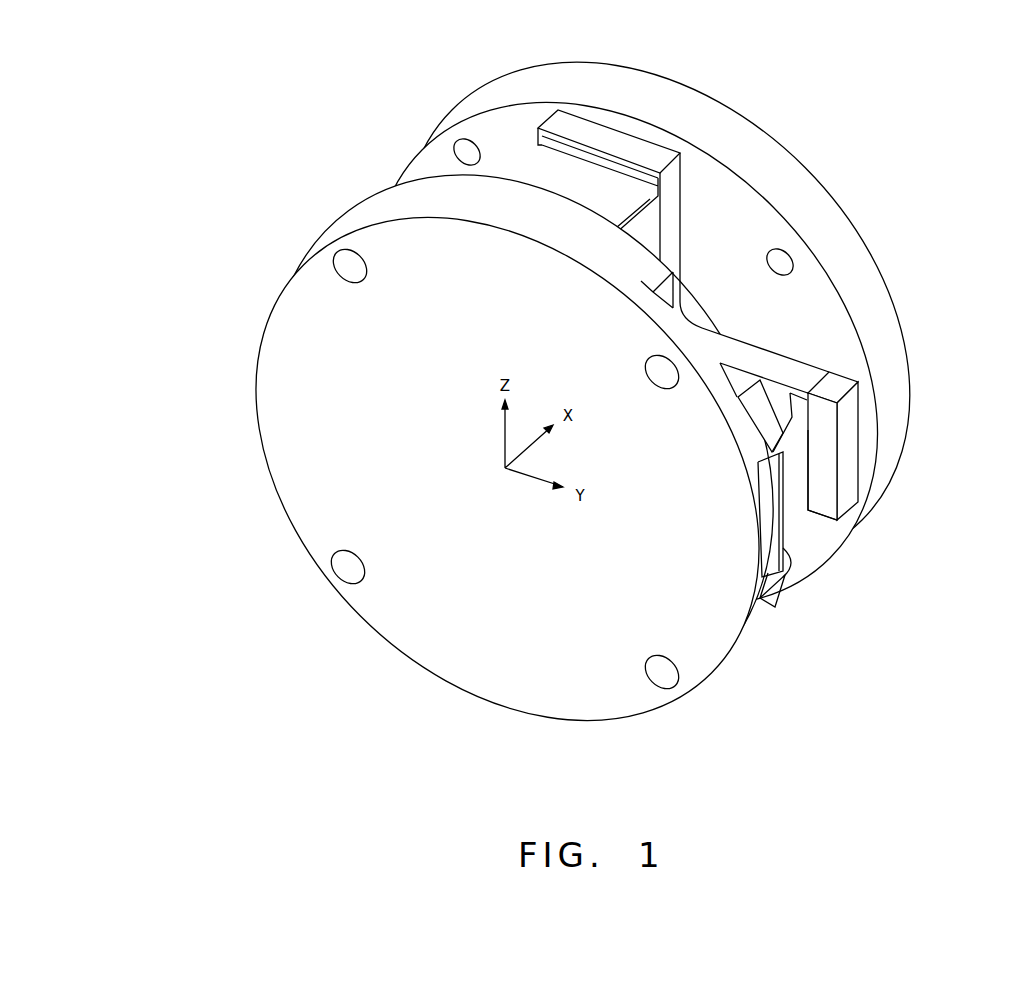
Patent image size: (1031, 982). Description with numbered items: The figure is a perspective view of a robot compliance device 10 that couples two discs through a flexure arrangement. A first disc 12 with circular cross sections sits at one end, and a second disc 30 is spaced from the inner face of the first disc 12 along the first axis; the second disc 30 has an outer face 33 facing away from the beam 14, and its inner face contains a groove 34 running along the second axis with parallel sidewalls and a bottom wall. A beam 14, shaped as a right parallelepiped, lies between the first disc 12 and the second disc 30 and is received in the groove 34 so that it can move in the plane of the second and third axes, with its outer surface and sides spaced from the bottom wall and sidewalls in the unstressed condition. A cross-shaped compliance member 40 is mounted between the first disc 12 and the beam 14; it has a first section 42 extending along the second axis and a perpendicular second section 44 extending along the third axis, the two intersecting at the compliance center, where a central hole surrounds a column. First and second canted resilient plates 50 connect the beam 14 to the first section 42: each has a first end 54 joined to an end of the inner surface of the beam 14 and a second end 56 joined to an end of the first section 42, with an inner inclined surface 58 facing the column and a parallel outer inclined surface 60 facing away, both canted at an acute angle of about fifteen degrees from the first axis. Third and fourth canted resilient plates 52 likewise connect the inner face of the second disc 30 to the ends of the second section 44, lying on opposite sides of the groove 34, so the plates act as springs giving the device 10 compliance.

The robot compliance device 10 is at (312, 608).
The first disc 12 is at (748, 143).
The beam 14 is at (773, 540).
The second disc 30 is at (302, 382).
The outer face 33 is at (483, 673).
The groove 34 is at (768, 573).
The compliance member 40 is at (830, 378).
The first section 42 is at (860, 470).
The second section 44 is at (610, 133).
The first and second canted resilient plates 50 is at (797, 500).
The third and fourth canted resilient plates 52 is at (562, 172).
The first end 54 is at (792, 513).
The second end 56 is at (808, 432).
The inner inclined surface 58 is at (790, 385).
The outer inclined surface 60 is at (800, 468).